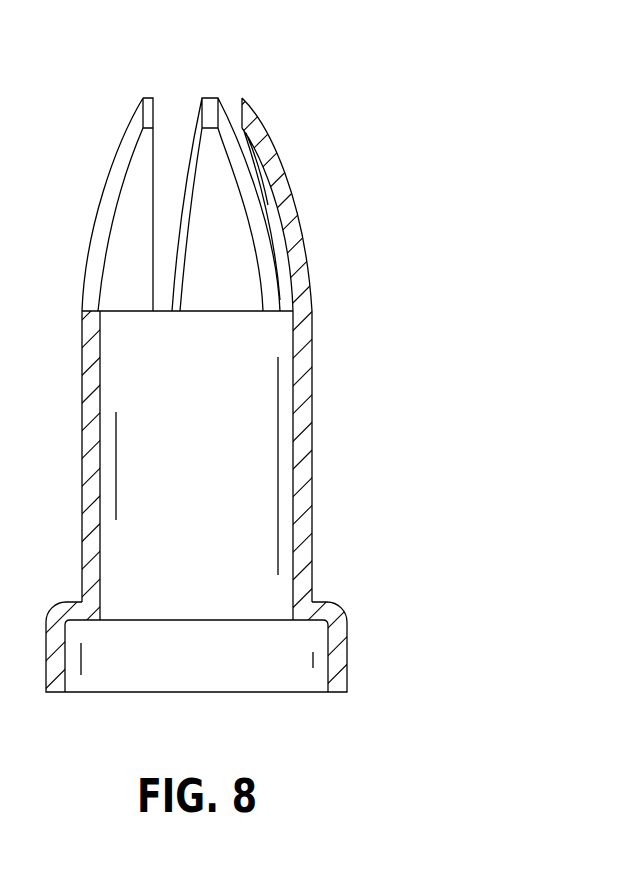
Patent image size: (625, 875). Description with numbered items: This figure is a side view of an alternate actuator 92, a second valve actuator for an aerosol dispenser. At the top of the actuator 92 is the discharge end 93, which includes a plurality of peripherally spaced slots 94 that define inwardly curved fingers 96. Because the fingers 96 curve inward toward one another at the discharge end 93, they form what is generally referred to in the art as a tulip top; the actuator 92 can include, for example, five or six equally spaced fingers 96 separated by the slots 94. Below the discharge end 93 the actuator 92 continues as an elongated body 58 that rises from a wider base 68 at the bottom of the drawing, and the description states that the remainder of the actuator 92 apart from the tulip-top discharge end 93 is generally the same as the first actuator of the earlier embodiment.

The alternate actuator 92 is at (312, 363).
The discharge end 93 is at (290, 182).
The slots 94 is at (175, 100).
The inwardly curved fingers 96 is at (105, 182).
The body 58 is at (313, 455).
The base 68 is at (347, 650).